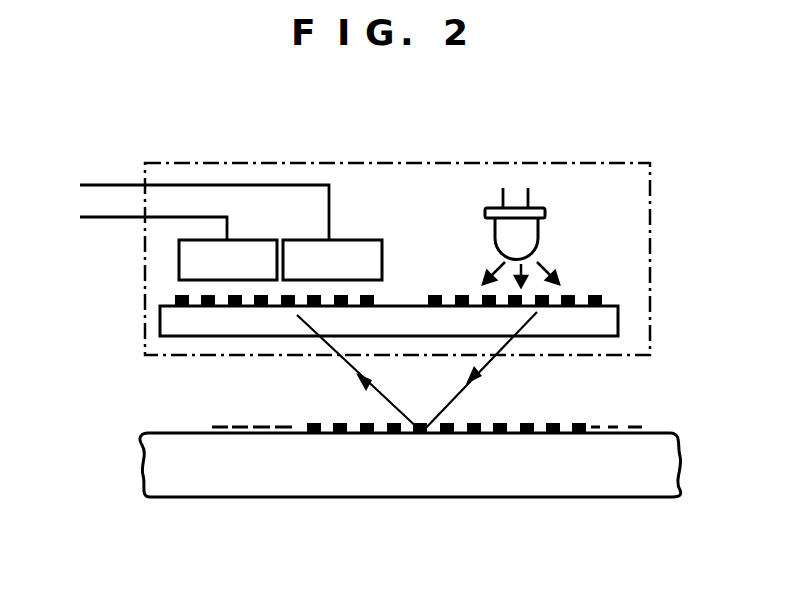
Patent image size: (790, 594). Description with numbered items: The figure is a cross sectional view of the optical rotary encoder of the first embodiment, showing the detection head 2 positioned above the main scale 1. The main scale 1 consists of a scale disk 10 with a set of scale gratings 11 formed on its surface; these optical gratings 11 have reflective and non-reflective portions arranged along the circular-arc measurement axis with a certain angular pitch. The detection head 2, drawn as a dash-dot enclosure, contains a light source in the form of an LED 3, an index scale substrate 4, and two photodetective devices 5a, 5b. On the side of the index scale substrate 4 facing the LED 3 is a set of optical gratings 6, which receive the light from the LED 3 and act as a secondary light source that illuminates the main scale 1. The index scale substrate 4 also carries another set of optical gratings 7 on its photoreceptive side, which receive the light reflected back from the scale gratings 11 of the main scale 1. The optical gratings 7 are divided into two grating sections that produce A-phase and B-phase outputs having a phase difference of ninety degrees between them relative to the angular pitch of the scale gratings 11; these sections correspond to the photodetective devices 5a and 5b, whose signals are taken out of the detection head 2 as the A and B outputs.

The main scale 1 is at (637, 480).
The detection head 2 is at (652, 228).
The LED 3 is at (546, 214).
The index scale substrate 4 is at (618, 315).
The photodetective device 5a is at (362, 248).
The photodetective device 5b is at (188, 258).
The optical gratings 6 is at (597, 297).
The optical gratings 7 is at (176, 294).
The scale disk 10 is at (489, 480).
The optical gratings 11 is at (522, 426).
The A-phase output A is at (187, 203).
The B-phase output B is at (136, 221).